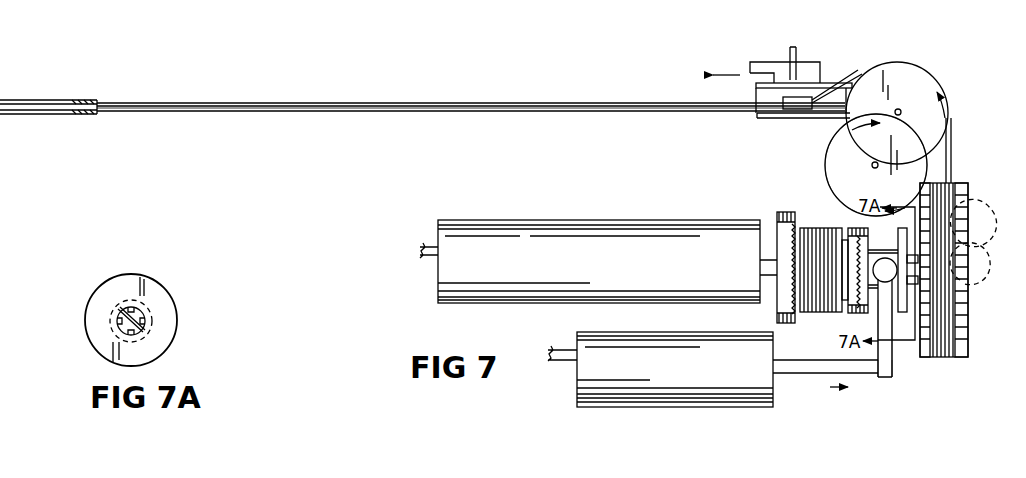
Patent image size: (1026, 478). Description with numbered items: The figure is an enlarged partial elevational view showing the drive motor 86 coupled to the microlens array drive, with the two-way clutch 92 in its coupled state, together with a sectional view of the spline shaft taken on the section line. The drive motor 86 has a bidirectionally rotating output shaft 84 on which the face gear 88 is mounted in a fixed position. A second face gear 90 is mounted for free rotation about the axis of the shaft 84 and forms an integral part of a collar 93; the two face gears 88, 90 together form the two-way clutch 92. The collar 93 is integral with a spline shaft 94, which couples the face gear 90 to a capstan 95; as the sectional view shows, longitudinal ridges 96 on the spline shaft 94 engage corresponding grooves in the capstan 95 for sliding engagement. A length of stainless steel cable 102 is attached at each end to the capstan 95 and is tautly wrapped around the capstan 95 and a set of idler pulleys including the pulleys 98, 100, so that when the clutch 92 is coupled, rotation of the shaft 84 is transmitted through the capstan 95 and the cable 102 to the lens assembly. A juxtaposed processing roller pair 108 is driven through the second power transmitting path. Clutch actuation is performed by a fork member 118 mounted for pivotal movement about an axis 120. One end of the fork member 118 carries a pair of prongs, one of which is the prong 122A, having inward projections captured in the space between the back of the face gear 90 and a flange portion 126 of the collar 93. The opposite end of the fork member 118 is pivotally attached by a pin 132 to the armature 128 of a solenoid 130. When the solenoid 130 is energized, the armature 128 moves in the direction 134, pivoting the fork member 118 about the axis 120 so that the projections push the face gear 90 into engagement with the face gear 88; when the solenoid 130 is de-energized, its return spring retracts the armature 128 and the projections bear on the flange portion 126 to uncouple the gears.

In FIG. 7, the motor output shaft 84 is at (772, 238).
In FIG. 7, the drive motor 86 is at (520, 228).
In FIG. 7, the face gear 88 is at (852, 237).
In FIG. 7, the face gear 90 is at (853, 208).
In FIG. 7, the two-way clutch 92 is at (842, 318).
In FIG. 7, the collar 93 is at (892, 252).
In FIG. 7A, the collar 93 is at (158, 300).
In FIG. 7, the spline shaft 94 is at (905, 262).
In FIG. 7A, the spline shaft 94 is at (148, 320).
In FIG. 7, the capstan 95 is at (968, 342).
In FIG. 7, the longitudinal ridges 96 is at (40, 100).
In FIG. 7A, the longitudinal ridges 96 is at (120, 312).
In FIG. 7, the idler pulley 98 is at (935, 93).
In FIG. 7, the idler pulley 100 is at (830, 150).
In FIG. 7, the stainless steel cable 102 is at (432, 113).
In FIG. 7, the processing roller pair 108 is at (985, 217).
In FIG. 7, the fork member 118 is at (892, 305).
In FIG. 7, the axis 120 is at (886, 330).
In FIG. 7, the prong 122A is at (912, 283).
In FIG. 7, the flange portion 126 is at (912, 300).
In FIG. 7A, the flange portion 126 is at (177, 331).
In FIG. 7, the armature 128 is at (818, 365).
In FIG. 7, the solenoid 130 is at (640, 333).
In FIG. 7, the pin 132 is at (888, 376).
In FIG. 7, the direction 134 is at (834, 400).